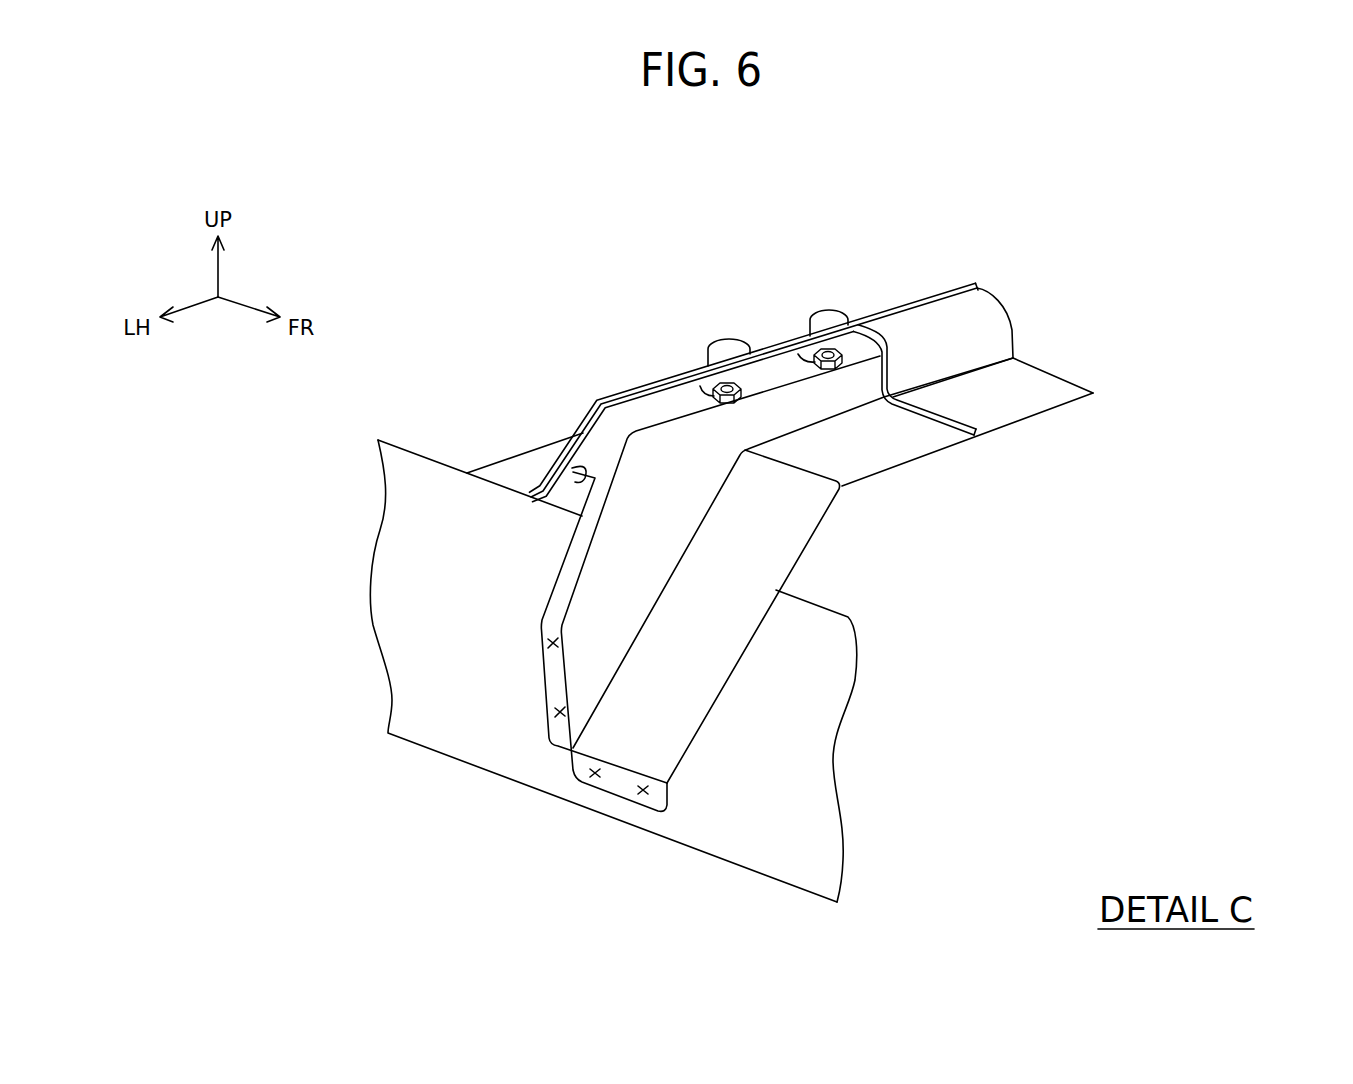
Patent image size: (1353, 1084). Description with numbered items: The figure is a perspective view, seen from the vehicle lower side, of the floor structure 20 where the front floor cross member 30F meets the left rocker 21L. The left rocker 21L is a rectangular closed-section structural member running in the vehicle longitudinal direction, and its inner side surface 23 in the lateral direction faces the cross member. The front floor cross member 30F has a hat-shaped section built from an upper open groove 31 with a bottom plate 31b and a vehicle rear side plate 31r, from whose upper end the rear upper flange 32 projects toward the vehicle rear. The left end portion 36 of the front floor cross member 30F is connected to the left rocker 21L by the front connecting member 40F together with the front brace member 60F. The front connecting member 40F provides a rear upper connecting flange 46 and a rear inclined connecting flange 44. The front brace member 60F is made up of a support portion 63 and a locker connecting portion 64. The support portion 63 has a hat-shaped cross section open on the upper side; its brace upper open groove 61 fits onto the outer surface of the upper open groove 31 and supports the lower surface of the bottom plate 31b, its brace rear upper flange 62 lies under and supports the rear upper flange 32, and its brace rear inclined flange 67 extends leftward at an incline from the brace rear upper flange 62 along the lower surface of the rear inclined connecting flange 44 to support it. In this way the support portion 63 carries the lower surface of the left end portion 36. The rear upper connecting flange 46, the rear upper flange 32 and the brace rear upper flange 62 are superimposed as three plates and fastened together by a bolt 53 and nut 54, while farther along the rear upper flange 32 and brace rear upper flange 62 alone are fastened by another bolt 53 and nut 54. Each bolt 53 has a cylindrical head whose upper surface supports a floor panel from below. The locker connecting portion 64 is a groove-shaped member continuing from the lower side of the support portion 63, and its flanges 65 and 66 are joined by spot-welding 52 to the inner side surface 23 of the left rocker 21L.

The vehicle body upper structure 20 is at (1088, 700).
The left rocker 21L is at (467, 765).
The inner side surface 23 is at (787, 773).
The front floor cross member 30F is at (1070, 372).
The upper open groove-shaped portion 31 is at (1015, 333).
The bottom plate 31b is at (1042, 400).
The vehicle rear side plate 31r is at (970, 347).
The rear upper flange 32 is at (932, 296).
The left end portion 36 is at (772, 337).
The front connecting member 40F is at (488, 449).
The rear inclined connecting flange 44 is at (585, 423).
The rear upper connecting flange 46 is at (645, 388).
The spot-welding 52 is at (597, 775).
The bolt 53 is at (727, 340).
The nut 54 is at (712, 383).
The front brace member 60F is at (830, 543).
The brace upper open groove 61 is at (913, 437).
The brace rear upper flange 62 is at (868, 338).
The support portion 63 is at (867, 471).
The locker connecting portion 64 is at (733, 618).
The flange 65 is at (552, 673).
The flange 66 is at (655, 813).
The brace rear inclined flange 67 is at (560, 482).